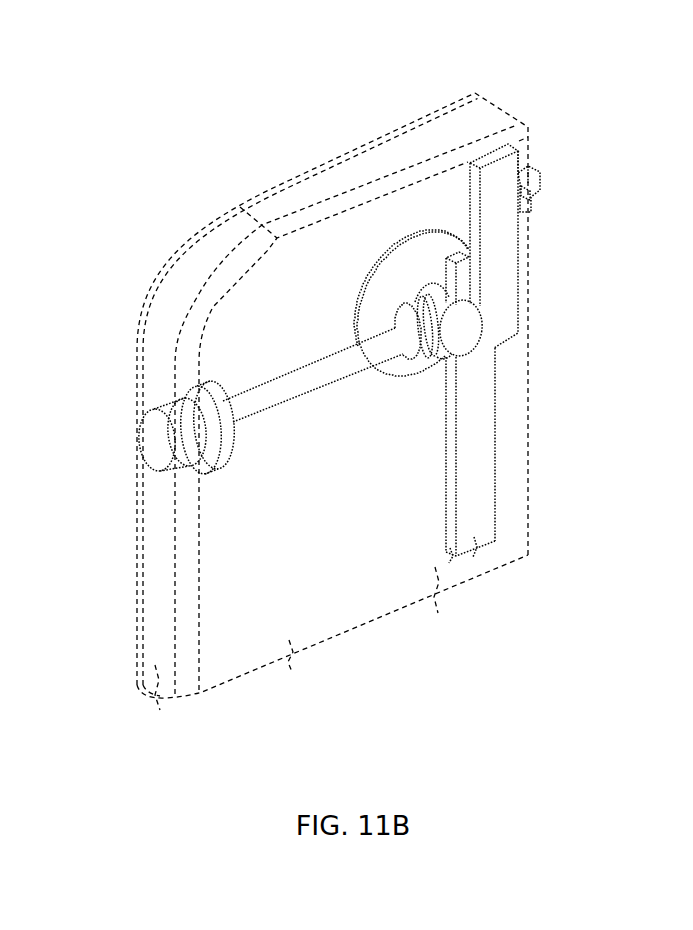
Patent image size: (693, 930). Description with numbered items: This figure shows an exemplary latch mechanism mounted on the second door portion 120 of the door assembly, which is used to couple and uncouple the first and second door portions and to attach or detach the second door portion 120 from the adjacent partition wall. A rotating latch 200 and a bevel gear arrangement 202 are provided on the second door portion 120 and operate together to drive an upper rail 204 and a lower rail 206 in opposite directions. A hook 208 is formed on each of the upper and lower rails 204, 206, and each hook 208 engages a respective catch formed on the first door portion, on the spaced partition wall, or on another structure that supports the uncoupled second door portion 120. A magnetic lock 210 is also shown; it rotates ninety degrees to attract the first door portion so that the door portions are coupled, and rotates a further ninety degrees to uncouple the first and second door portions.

The second door portion 120 is at (338, 162).
The rotating latch 200 is at (421, 252).
The bevel gear arrangement 202 is at (468, 324).
The upper rail 204 is at (502, 243).
The lower rail 206 is at (477, 527).
The hook 208 is at (540, 186).
The magnetic lock 210 is at (160, 440).